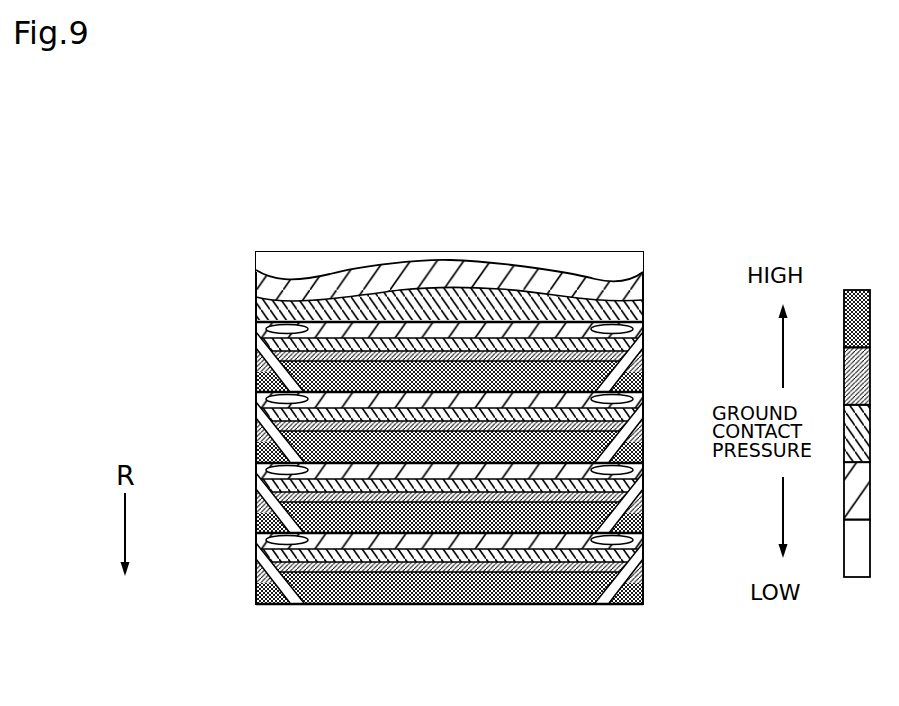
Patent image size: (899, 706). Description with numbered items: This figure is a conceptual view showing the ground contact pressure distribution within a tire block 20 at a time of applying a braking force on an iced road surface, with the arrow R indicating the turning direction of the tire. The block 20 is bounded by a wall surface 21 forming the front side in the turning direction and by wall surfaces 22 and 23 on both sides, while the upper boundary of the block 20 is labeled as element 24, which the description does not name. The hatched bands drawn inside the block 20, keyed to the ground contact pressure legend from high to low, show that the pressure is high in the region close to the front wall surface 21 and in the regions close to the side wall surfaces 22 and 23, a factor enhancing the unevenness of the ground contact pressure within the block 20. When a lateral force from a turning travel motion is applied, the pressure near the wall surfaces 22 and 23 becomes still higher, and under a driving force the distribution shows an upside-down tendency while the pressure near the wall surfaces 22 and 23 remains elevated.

The block 20 is at (454, 410).
The wall surface 21 is at (450, 605).
The wall surface 22 is at (258, 484).
The wall surface 23 is at (643, 488).
The tread surface 24 is at (438, 252).